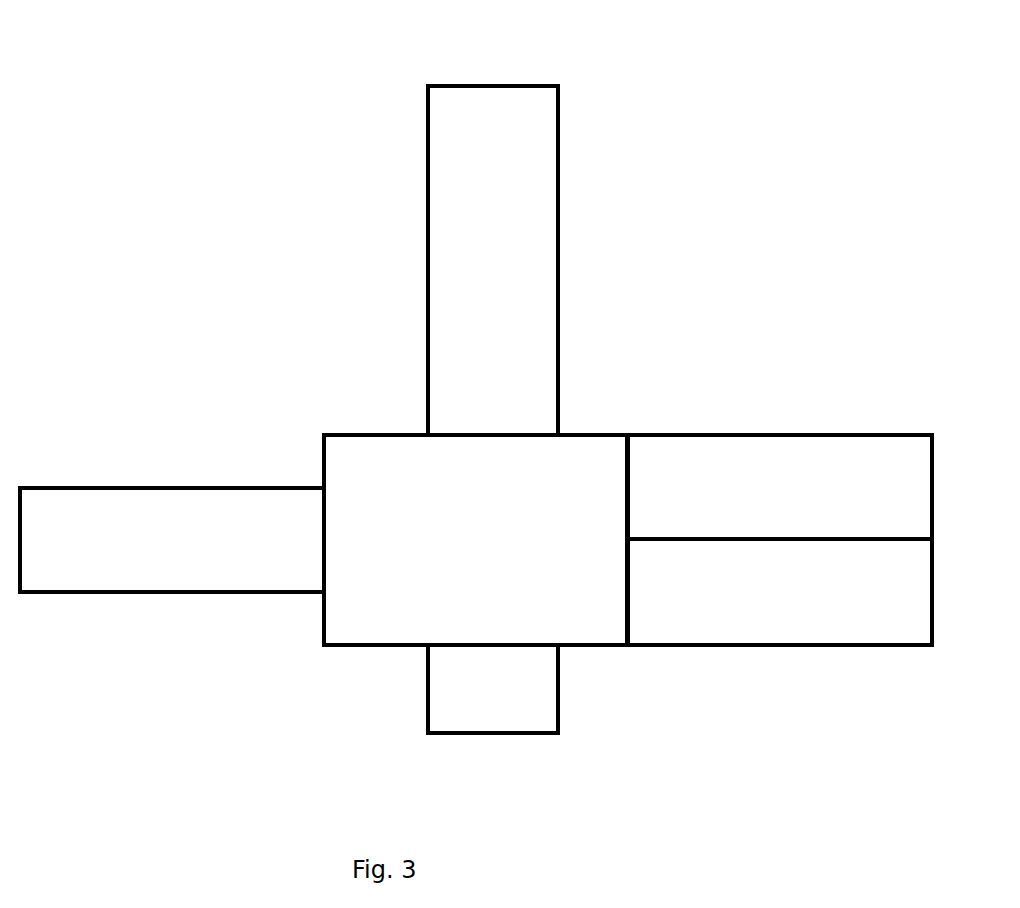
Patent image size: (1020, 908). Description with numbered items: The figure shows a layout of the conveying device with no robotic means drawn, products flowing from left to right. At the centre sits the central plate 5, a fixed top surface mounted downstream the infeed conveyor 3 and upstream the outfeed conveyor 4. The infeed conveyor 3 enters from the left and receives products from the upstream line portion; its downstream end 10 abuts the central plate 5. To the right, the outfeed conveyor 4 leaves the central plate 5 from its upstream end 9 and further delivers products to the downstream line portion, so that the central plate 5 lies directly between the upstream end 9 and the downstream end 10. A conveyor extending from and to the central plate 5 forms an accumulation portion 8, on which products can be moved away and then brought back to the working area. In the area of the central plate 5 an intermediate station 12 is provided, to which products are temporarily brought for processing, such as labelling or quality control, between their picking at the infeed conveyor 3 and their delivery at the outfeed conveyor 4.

The infeed conveyor 3 is at (185, 562).
The outfeed conveyor 4 is at (819, 470).
The central plate 5 is at (377, 618).
The accumulation portion 8 is at (524, 155).
The upstream end of the outfeed conveyor 9 is at (651, 468).
The downstream end of the infeed conveyor 10 is at (284, 514).
The intermediate station 12 is at (521, 708).